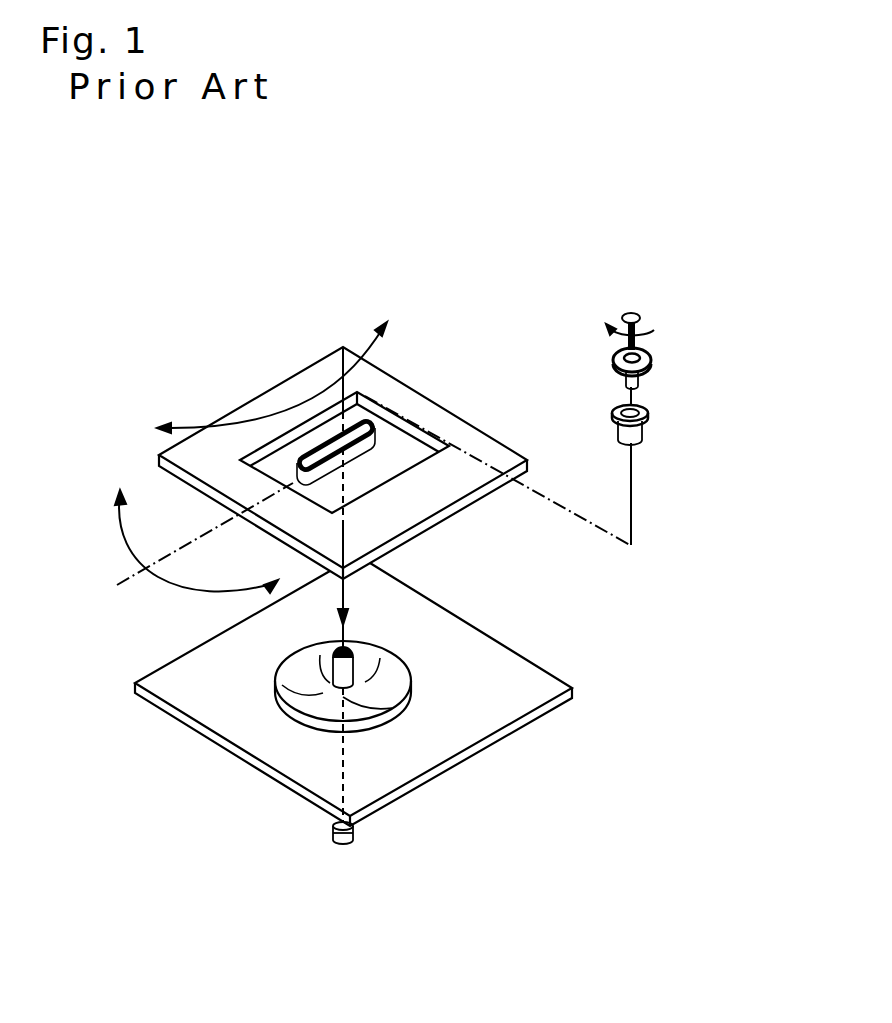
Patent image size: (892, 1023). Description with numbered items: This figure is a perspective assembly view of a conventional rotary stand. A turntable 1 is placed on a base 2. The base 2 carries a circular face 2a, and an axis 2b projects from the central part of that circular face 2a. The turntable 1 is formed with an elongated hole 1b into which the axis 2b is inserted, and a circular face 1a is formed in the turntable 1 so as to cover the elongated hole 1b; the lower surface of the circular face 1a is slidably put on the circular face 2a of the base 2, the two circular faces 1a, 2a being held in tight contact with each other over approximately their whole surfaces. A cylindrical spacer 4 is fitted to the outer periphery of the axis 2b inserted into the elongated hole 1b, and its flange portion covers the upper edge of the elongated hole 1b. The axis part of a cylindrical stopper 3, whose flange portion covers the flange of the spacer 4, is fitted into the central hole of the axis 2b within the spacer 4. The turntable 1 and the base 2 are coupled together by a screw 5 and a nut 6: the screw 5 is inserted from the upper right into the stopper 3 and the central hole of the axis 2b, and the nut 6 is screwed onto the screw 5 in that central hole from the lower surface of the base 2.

The turntable 1 is at (430, 400).
The circular face 1a is at (362, 457).
The elongated hole 1b is at (357, 490).
The base 2 is at (523, 657).
The circular face 2a is at (400, 698).
The axis 2b is at (353, 656).
The cylindrical stopper 3 is at (652, 359).
The cylindrical spacer 4 is at (643, 430).
The screw 5 is at (638, 312).
The nut 6 is at (333, 826).